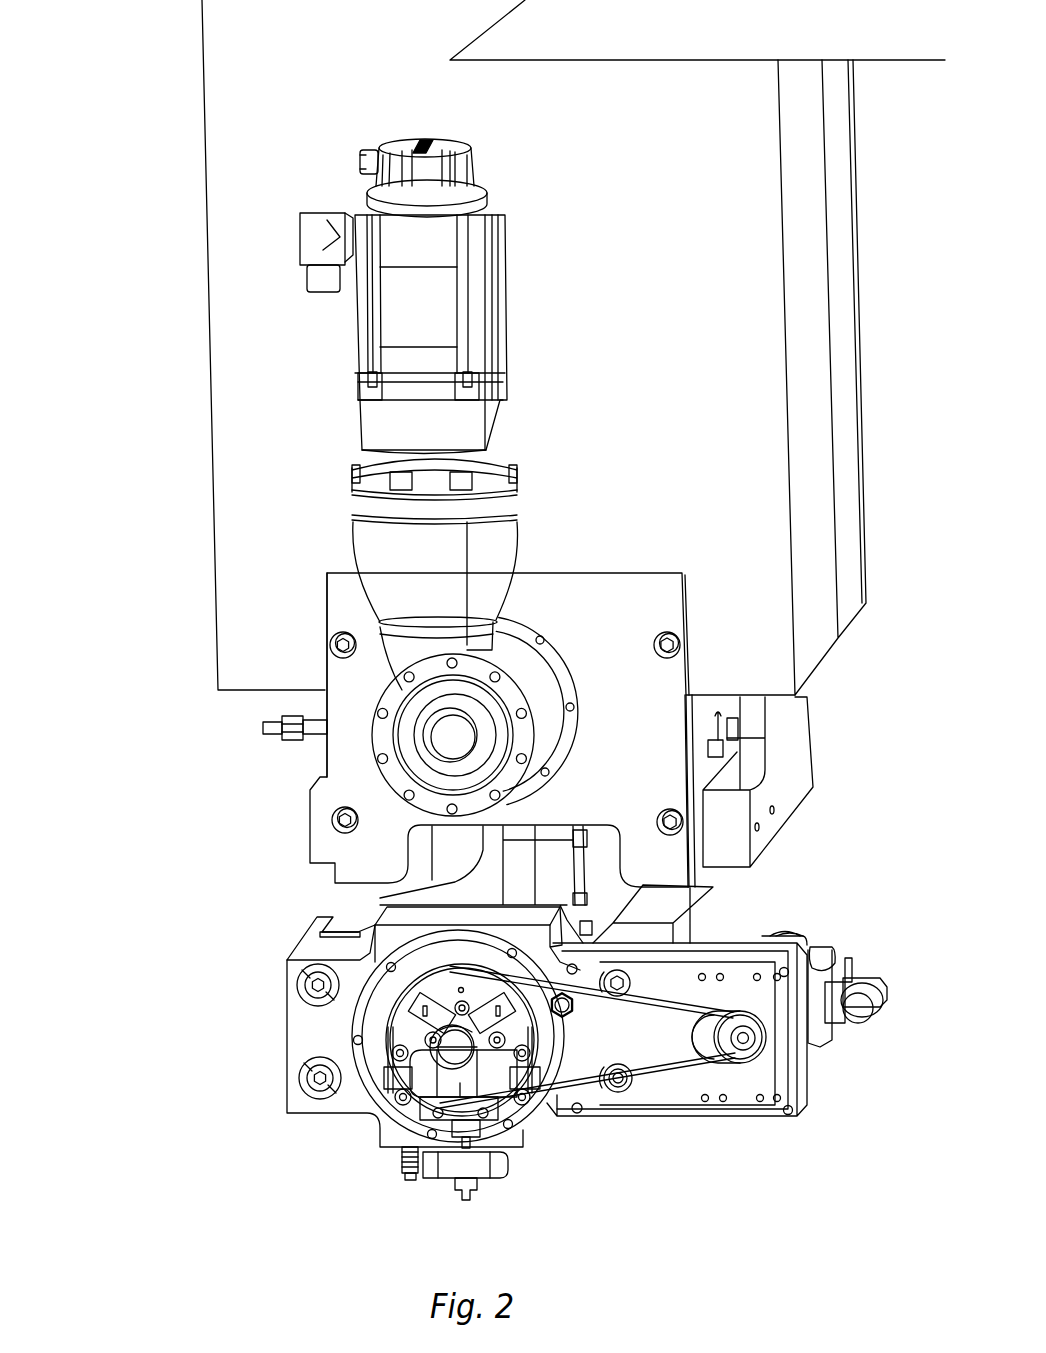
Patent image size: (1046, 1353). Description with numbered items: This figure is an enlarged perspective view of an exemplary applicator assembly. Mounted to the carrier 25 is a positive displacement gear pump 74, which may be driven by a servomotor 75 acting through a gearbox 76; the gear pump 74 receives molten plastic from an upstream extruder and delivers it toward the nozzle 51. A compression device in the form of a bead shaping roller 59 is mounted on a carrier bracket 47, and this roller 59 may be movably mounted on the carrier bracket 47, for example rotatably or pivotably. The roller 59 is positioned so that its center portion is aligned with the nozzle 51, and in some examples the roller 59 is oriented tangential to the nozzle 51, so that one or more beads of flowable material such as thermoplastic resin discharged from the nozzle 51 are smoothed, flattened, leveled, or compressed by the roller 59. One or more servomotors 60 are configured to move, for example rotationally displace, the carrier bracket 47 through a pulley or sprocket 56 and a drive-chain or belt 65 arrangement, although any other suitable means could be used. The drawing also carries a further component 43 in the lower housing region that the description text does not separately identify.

The carrier 25 is at (163, 447).
The servomotor 75 is at (413, 142).
The gearbox 76 is at (500, 737).
The positive displacement gear pump 74 is at (432, 884).
The gearbox housing 43 is at (255, 1021).
The carrier bracket 47 is at (410, 1012).
The nozzle 51 is at (437, 1035).
The bead shaping roller 59 is at (483, 1115).
The drive-chain or belt 65 is at (583, 997).
The pulley or sprocket 56 is at (748, 1058).
The servomotor 60 is at (832, 947).